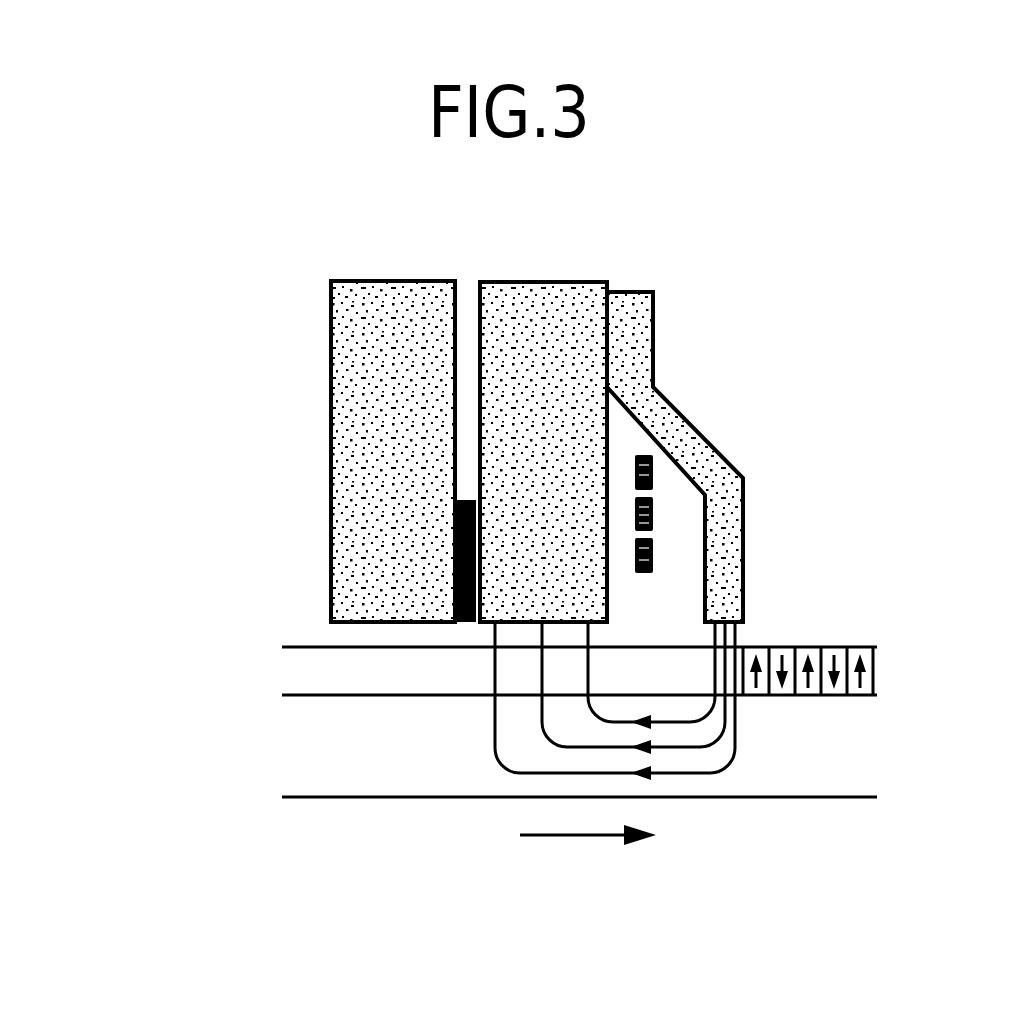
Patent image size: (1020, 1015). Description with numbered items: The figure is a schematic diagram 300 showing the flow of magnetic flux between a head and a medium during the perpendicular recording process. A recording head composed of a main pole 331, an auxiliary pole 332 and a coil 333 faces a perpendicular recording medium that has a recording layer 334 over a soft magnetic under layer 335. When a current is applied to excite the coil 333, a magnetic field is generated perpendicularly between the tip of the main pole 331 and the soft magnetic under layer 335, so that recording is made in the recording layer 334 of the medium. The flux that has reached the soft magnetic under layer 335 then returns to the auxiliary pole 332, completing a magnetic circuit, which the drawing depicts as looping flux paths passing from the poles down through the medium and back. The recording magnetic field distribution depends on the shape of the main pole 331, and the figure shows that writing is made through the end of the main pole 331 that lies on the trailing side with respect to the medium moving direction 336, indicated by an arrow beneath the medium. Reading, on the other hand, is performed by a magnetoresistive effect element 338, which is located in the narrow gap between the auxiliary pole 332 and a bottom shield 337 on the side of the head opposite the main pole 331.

The schematic diagram 300 is at (166, 149).
The main pole 331 is at (728, 560).
The auxiliary pole 332 is at (557, 290).
The coil 333 is at (655, 503).
The recording layer 334 is at (295, 674).
The soft magnetic under layer 335 is at (295, 752).
The medium moving direction 336 is at (578, 840).
The bottom shield 337 is at (395, 290).
The magnetoresistive effect element 338 is at (458, 555).